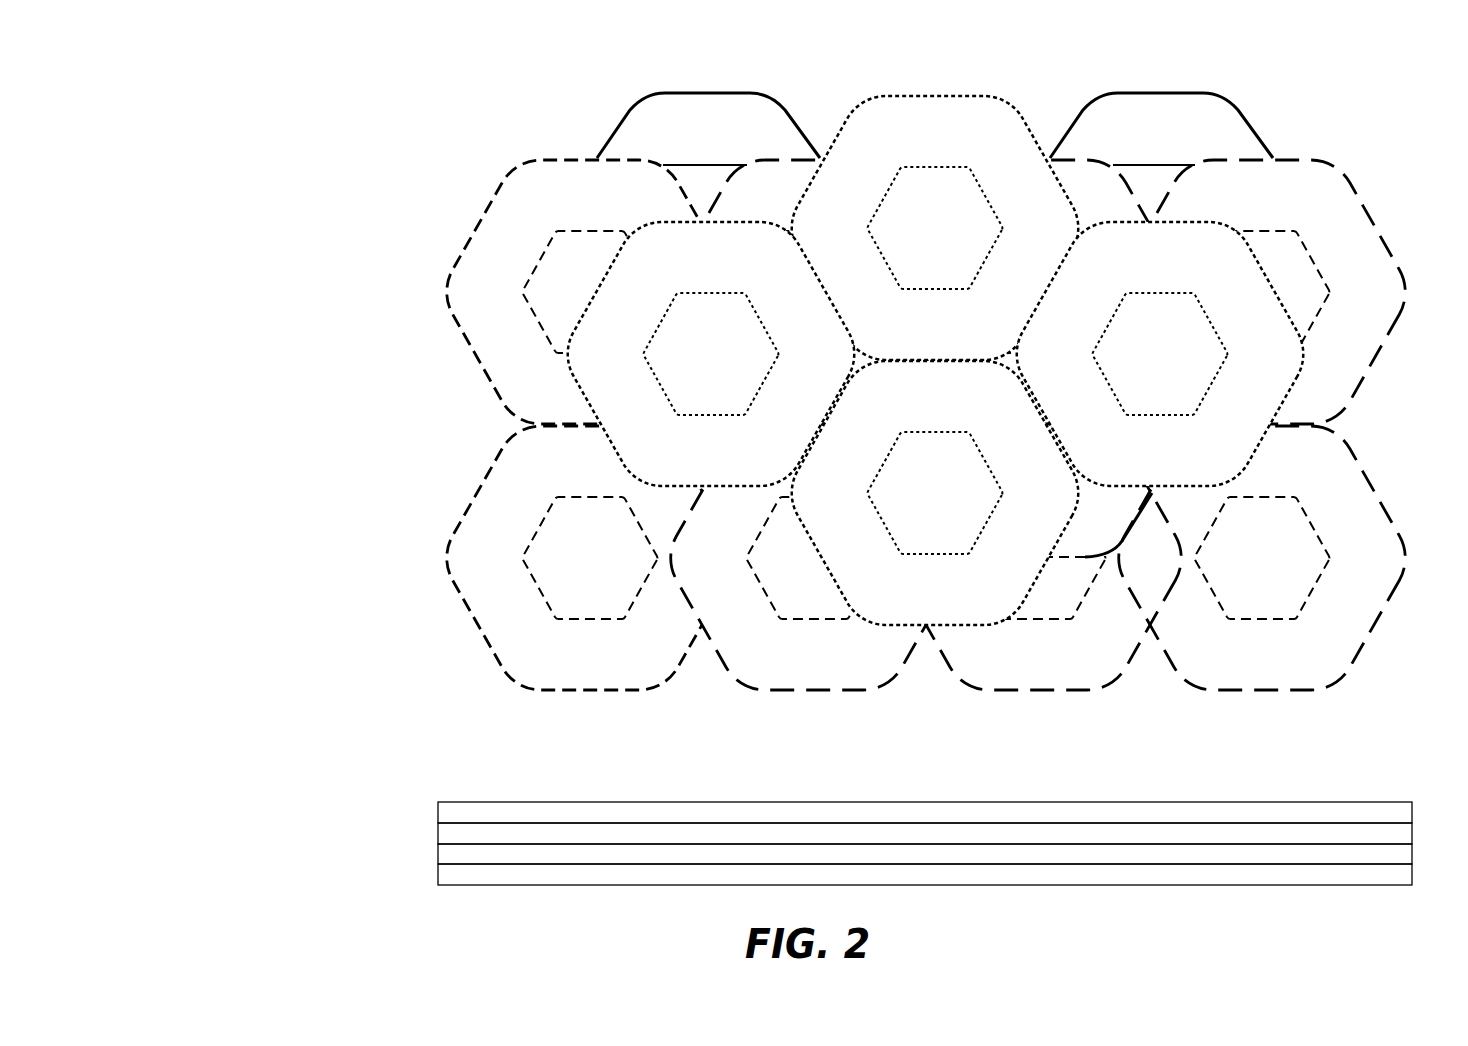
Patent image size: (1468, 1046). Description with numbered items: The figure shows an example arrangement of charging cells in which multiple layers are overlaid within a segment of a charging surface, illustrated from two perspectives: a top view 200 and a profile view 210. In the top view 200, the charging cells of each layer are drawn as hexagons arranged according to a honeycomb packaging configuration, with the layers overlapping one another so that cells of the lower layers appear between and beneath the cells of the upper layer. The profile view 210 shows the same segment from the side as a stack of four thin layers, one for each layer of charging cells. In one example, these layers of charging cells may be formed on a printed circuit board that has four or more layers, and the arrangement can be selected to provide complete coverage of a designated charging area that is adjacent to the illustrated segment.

The top view perspective 200 is at (160, 70).
The profile view perspective 210 is at (160, 736).